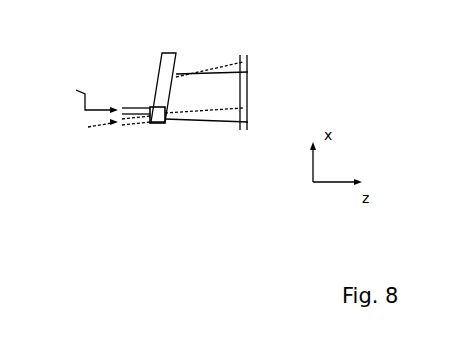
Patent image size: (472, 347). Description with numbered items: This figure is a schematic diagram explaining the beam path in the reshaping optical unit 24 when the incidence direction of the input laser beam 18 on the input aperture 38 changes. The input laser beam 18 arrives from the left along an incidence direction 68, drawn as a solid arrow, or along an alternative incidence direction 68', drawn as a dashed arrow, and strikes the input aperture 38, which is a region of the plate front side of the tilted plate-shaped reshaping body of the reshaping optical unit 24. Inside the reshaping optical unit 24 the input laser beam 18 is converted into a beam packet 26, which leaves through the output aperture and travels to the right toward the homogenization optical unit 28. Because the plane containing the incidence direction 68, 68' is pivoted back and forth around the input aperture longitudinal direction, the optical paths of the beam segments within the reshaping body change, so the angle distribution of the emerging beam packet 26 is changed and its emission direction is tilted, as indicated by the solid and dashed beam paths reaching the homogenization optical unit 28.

The input laser beam 18 is at (128, 107).
The reshaping optical unit 24 is at (170, 52).
The beam packet 26 is at (203, 67).
The homogenization optical unit 28 is at (245, 40).
The input aperture 38 is at (150, 106).
The incidence direction 68 is at (90, 93).
The incidence direction 68' is at (165, 117).